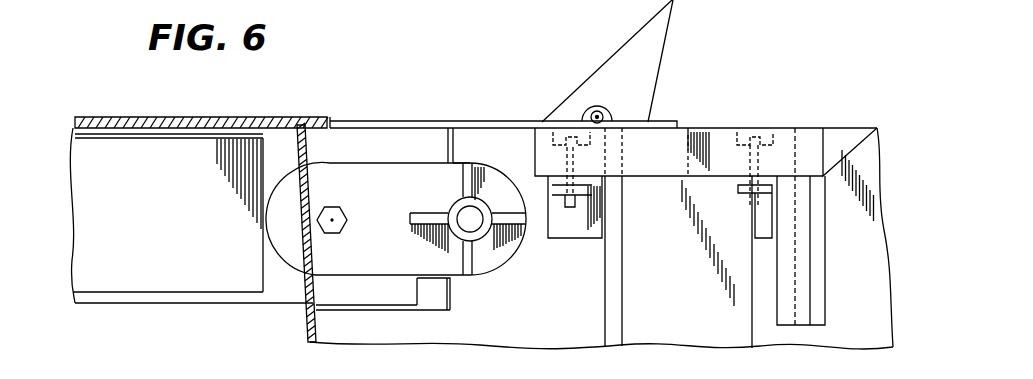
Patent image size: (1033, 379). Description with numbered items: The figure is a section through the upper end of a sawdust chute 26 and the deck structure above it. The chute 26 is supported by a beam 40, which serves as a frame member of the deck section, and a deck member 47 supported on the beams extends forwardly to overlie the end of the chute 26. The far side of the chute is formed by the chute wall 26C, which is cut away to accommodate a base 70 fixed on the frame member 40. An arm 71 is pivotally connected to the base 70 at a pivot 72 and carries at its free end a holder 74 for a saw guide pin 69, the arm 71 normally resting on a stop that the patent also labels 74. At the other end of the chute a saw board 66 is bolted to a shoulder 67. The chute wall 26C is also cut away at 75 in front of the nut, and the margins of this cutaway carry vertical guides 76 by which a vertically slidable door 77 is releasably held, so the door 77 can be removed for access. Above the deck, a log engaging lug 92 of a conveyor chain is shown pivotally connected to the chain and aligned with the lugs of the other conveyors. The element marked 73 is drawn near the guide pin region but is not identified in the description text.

The beam 40 is at (190, 153).
The sawdust chute 26 is at (305, 317).
The deck member 47 is at (397, 120).
The base 70 is at (423, 142).
The sawdust chute wall 26C is at (498, 142).
The arm 71 is at (358, 168).
The saw guide pin 69 is at (468, 218).
The pivot connection 72 is at (343, 220).
The holder 74 is at (433, 292).
The bracket 73 is at (493, 230).
The saw board 66 is at (720, 147).
The cutaway 75 is at (793, 155).
The shoulder 67 is at (663, 187).
The vertical guide 76 is at (803, 270).
The door 77 is at (873, 153).
The log engaging lug 92 is at (645, 57).